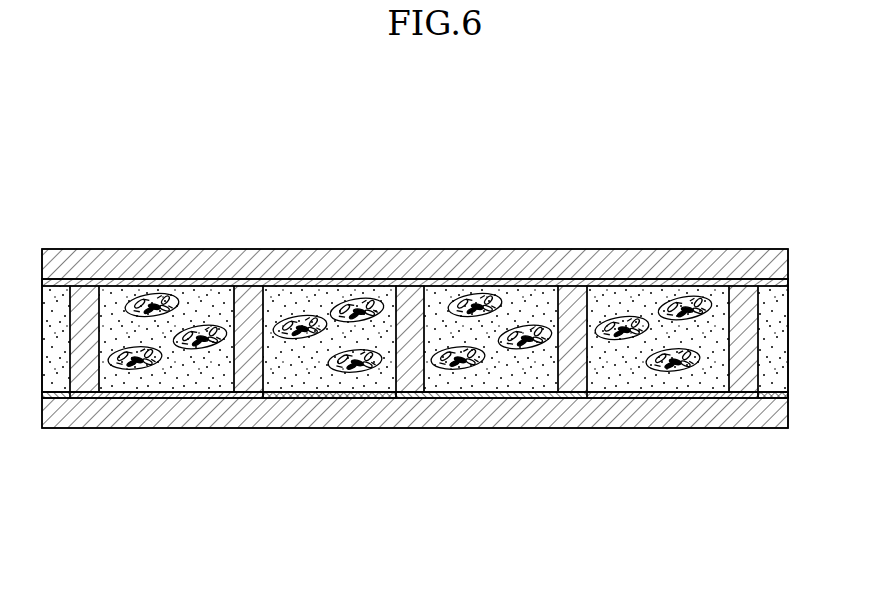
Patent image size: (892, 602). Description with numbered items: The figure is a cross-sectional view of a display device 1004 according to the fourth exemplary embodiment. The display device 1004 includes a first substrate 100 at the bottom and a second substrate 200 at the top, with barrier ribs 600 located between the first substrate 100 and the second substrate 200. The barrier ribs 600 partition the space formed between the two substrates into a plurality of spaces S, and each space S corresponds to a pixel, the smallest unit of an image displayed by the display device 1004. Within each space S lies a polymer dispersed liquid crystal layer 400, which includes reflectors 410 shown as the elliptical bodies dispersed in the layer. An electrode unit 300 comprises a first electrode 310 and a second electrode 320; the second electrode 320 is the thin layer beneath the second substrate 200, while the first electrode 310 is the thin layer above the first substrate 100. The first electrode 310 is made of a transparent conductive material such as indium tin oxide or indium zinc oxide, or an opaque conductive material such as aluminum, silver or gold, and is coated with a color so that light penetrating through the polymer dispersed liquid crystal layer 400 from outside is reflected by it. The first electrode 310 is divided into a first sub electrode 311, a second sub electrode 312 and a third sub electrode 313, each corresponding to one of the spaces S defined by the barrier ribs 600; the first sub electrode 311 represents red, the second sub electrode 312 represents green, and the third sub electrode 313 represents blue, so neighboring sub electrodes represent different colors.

The display device 1004 is at (413, 176).
The first substrate 100 is at (585, 415).
The second substrate 200 is at (358, 266).
The electrode unit 300 is at (170, 279).
The first electrode 310 is at (173, 482).
The first sub electrode 311 is at (190, 398).
The second sub electrode 312 is at (332, 398).
The third sub electrode 313 is at (57, 398).
The second electrode 320 is at (117, 286).
The polymer dispersed liquid crystal layer 400 is at (473, 290).
The reflector 410 is at (705, 337).
The barrier rib 600 is at (248, 302).
The space S is at (543, 365).